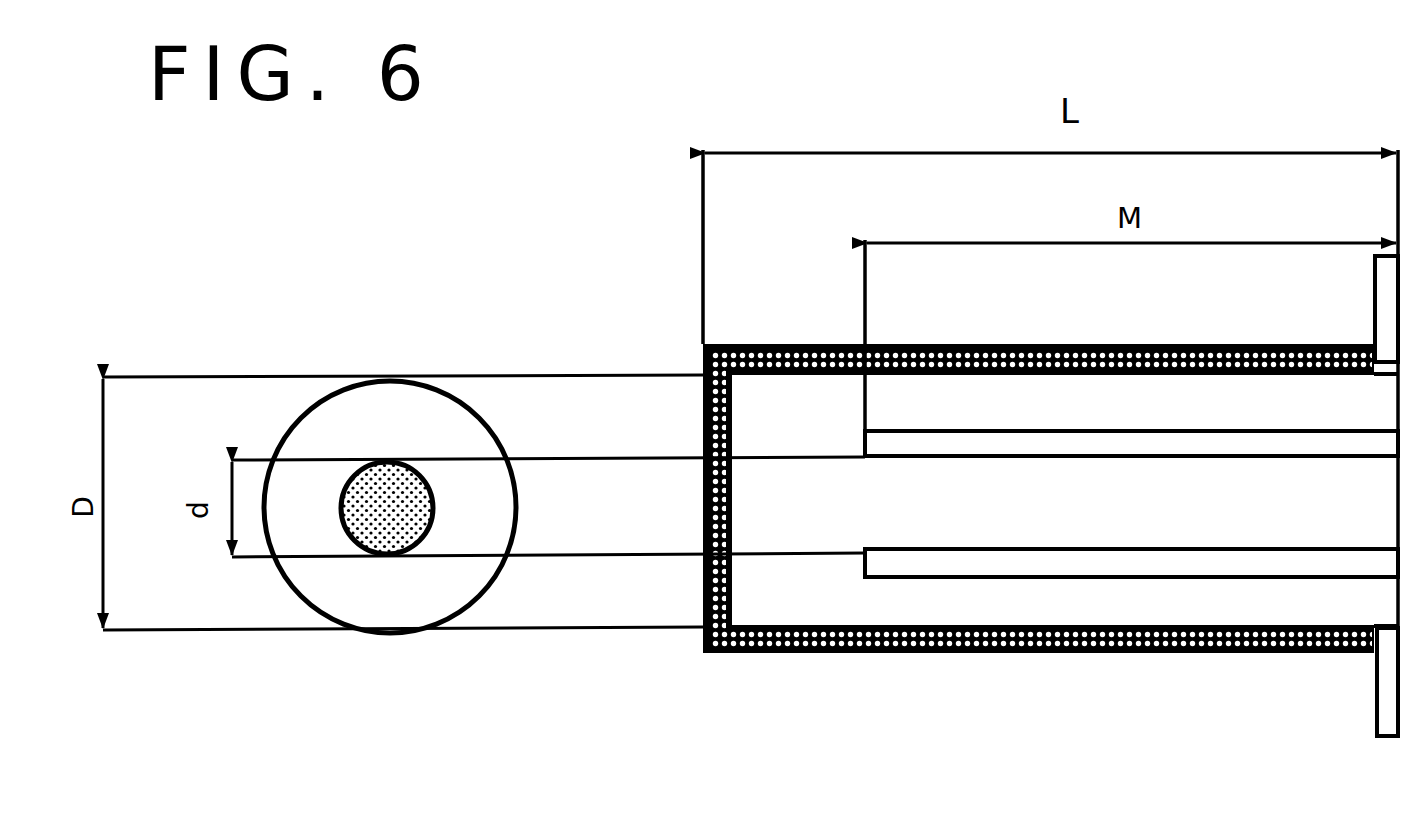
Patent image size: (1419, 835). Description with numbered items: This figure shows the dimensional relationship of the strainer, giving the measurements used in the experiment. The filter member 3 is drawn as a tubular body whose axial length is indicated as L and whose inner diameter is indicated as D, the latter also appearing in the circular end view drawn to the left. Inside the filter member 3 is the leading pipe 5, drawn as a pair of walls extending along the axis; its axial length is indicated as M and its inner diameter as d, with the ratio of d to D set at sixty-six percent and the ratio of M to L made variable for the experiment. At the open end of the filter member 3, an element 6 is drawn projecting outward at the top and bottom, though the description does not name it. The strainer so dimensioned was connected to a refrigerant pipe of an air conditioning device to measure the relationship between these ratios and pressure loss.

The filter member 3 is at (1184, 653).
The leading pipe 5 is at (1259, 579).
The flange 6 is at (1374, 680).